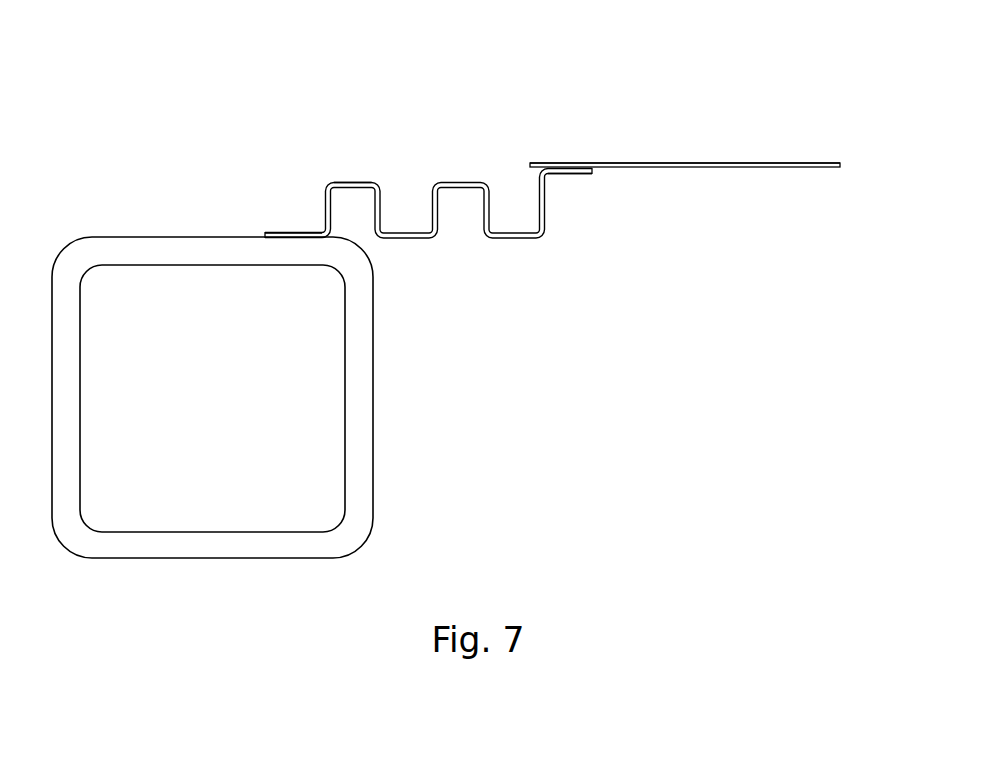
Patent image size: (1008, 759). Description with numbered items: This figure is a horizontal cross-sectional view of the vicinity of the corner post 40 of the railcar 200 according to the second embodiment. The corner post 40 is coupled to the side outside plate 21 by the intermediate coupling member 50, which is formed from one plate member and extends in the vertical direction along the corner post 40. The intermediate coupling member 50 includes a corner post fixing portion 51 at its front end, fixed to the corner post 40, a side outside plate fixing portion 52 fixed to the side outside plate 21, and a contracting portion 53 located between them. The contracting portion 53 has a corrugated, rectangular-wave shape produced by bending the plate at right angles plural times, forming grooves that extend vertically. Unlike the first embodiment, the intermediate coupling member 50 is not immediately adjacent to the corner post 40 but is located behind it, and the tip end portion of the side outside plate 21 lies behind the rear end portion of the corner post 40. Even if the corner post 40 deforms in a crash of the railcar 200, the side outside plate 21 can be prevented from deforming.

The railcar 200 is at (653, 97).
The side outside plate 21 is at (737, 163).
The corner post 40 is at (357, 366).
The intermediate coupling member 50 is at (517, 257).
The corner post fixing portion 51 is at (298, 232).
The side outside plate fixing portion 52 is at (570, 170).
The contracting portion 53 is at (348, 183).